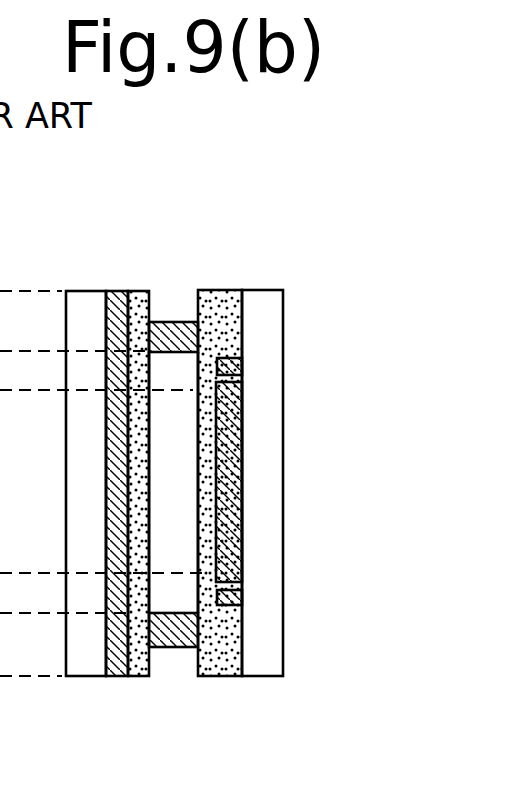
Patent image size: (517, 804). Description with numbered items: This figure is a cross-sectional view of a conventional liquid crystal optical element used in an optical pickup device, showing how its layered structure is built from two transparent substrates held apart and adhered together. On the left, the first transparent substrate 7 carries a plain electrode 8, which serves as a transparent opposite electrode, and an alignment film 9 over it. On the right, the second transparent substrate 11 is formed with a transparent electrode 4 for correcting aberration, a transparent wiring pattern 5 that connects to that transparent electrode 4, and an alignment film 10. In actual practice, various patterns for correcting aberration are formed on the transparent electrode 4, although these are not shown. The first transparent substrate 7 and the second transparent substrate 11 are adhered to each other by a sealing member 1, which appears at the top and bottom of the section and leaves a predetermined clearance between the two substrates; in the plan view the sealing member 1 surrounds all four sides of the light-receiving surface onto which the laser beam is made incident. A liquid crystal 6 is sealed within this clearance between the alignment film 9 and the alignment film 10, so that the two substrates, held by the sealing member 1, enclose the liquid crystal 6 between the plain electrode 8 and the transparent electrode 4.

The sealing member 1 is at (176, 322).
The transparent electrode for correcting aberration 4 is at (238, 458).
The transparent wiring pattern 5 is at (240, 363).
The liquid crystal 6 is at (178, 368).
The first transparent substrate 7 is at (72, 630).
The plain electrode 8 is at (110, 633).
The alignment film 9 is at (138, 678).
The alignment film 10 is at (238, 645).
The second transparent substrate 11 is at (277, 581).